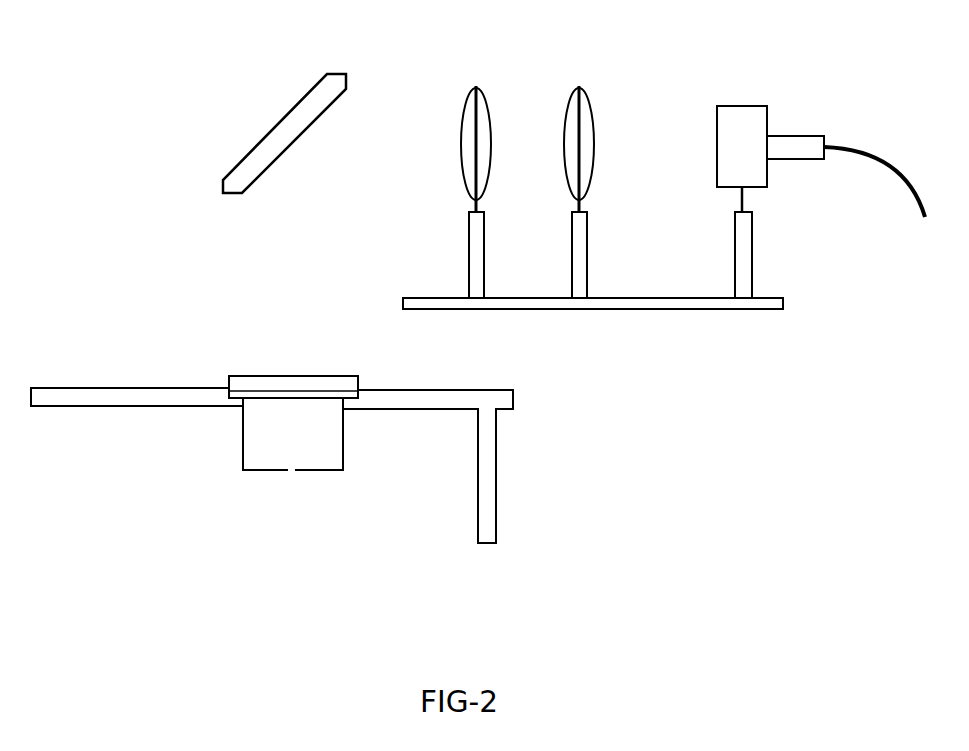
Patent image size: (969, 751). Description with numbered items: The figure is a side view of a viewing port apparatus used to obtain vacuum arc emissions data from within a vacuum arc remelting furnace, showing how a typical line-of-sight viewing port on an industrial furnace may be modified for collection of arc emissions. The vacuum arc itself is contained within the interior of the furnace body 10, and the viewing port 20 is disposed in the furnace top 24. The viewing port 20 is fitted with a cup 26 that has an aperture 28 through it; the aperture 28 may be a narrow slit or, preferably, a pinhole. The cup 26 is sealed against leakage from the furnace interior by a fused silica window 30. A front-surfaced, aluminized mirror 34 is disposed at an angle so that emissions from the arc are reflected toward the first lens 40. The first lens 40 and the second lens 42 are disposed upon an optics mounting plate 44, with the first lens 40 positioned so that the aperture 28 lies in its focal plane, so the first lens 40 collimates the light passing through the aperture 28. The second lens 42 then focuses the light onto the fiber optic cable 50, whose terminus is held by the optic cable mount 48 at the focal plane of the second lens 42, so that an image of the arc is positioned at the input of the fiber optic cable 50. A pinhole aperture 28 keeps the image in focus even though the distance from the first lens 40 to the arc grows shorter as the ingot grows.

The furnace body 10 is at (497, 478).
The viewing port 20 is at (294, 346).
The furnace top 24 is at (122, 387).
The cup 26 is at (267, 447).
The aperture 28 is at (292, 472).
The fused silica window 30 is at (265, 382).
The front-surfaced, aluminized mirror 34 is at (263, 138).
The first lens 40 is at (466, 115).
The second lens 42 is at (590, 112).
The optics mounting plate 44 is at (635, 309).
The optic cable mount 48 is at (745, 103).
The fiber optic cable 50 is at (863, 147).